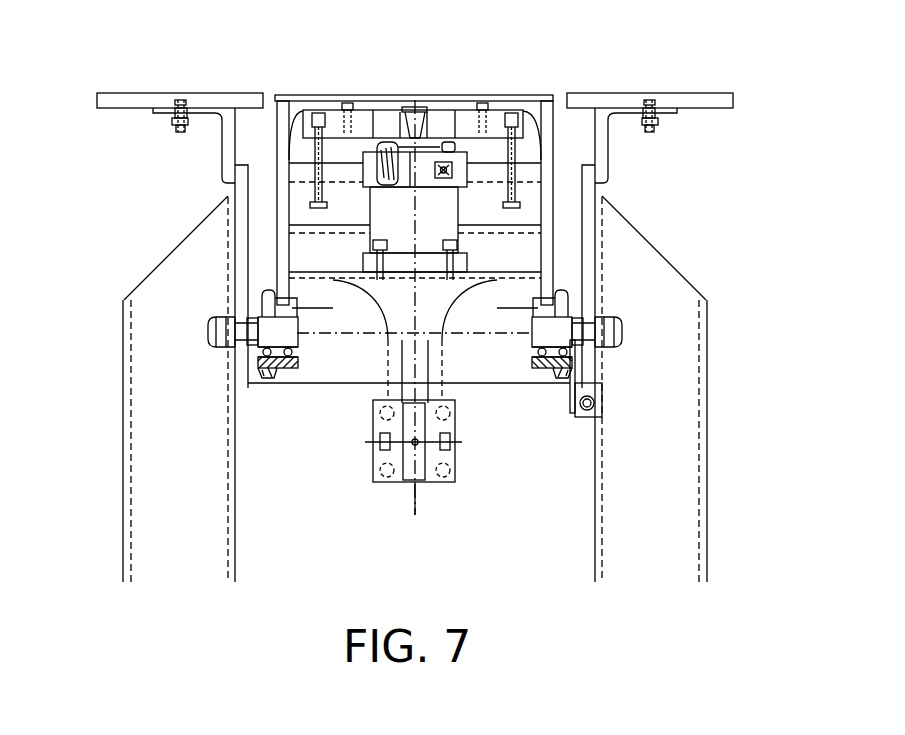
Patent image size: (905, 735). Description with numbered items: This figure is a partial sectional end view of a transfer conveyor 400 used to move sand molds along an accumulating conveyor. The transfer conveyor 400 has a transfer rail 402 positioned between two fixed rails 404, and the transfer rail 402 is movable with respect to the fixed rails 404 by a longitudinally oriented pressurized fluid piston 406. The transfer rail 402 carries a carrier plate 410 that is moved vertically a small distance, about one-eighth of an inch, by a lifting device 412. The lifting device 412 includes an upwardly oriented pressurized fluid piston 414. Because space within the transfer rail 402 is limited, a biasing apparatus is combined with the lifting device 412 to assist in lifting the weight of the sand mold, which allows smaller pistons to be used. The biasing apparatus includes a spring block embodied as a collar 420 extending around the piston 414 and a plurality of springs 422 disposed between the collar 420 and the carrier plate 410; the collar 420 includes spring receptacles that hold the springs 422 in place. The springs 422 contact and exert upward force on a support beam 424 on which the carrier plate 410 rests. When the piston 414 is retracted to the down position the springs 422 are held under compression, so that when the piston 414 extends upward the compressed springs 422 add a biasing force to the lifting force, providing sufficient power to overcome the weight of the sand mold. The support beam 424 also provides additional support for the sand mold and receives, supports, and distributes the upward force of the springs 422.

The transfer conveyor 400 is at (712, 227).
The transfer rail 402 is at (530, 86).
The fixed rails 404 is at (117, 112).
The pressurized fluid piston 406 is at (467, 470).
The carrier plate 410 is at (338, 97).
The lifting device 412 is at (382, 217).
The pressurized fluid piston 414 is at (428, 130).
The collar 420 is at (458, 170).
The springs 422 is at (383, 146).
The support beam 424 is at (388, 173).